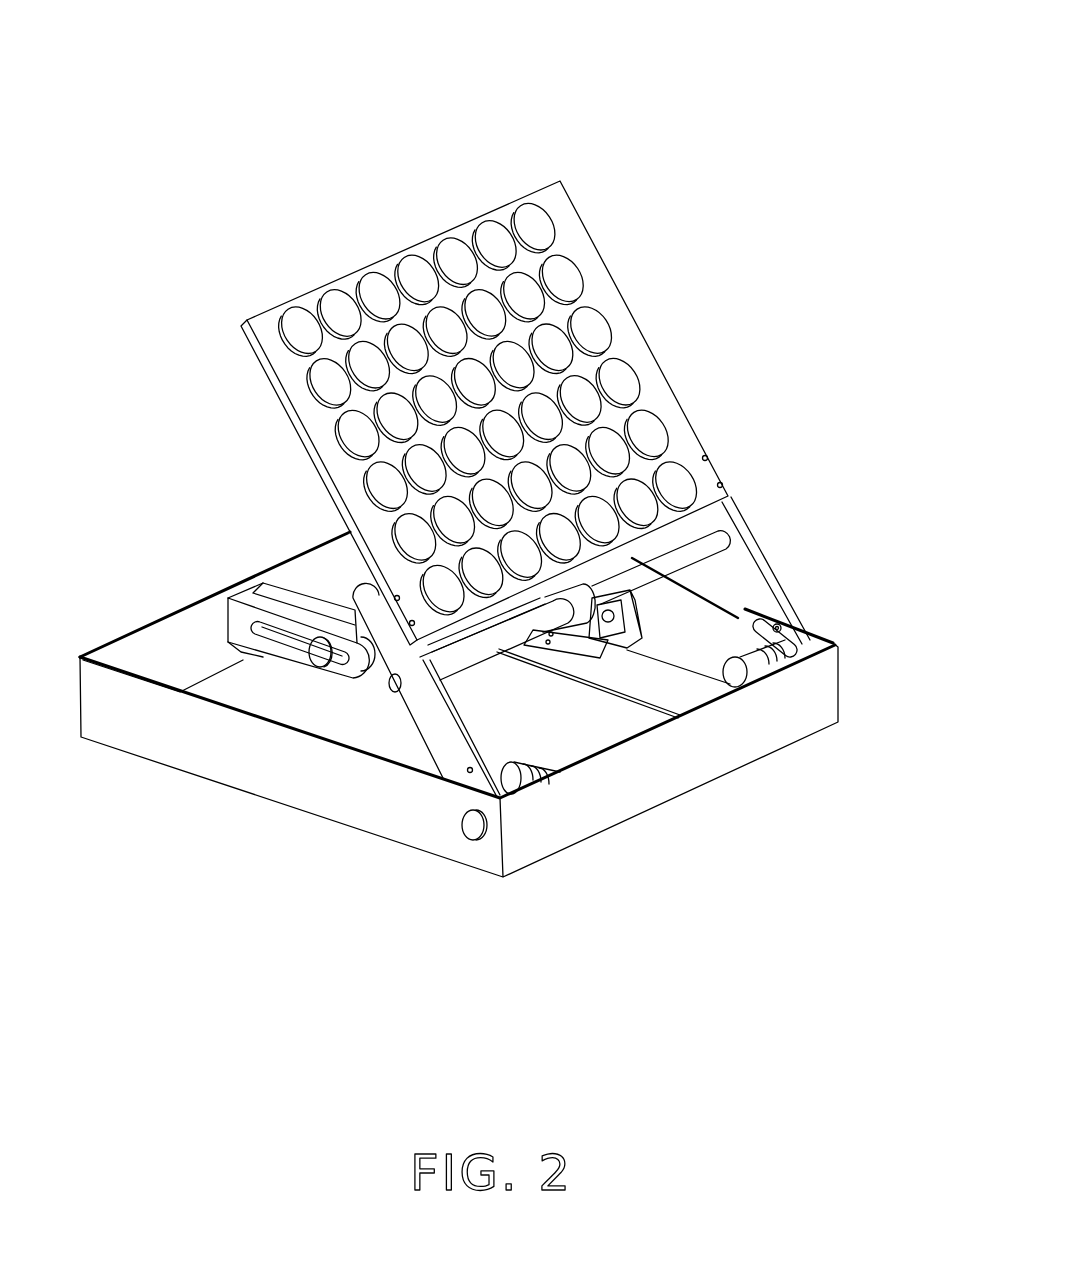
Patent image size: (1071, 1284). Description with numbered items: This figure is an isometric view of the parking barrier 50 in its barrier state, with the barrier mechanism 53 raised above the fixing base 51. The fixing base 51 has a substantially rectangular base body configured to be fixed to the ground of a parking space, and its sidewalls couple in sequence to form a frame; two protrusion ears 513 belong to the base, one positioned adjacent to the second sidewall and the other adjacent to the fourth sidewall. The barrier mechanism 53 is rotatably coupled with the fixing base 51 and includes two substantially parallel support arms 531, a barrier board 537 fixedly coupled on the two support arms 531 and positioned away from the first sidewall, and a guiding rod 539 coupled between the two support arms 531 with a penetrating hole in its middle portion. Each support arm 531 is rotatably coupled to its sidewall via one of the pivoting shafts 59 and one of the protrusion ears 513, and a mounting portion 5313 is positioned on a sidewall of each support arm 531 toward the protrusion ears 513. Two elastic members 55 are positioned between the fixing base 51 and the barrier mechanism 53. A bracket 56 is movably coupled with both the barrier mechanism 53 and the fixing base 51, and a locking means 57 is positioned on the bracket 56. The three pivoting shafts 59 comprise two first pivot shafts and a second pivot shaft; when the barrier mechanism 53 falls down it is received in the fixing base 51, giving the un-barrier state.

The parking barrier 50 is at (503, 31).
The fixing base 51 is at (270, 768).
The barrier mechanism 53 is at (797, 335).
The barrier board 537 is at (655, 398).
The guiding rod 539 is at (713, 545).
The support arm 531 is at (743, 573).
The mounting portion 5313 is at (777, 627).
The elastic member 55 is at (800, 633).
The bracket 56 is at (350, 627).
The locking means 57 is at (590, 630).
The pivoting shaft 59 is at (473, 827).
The protrusion ear 513 is at (747, 677).